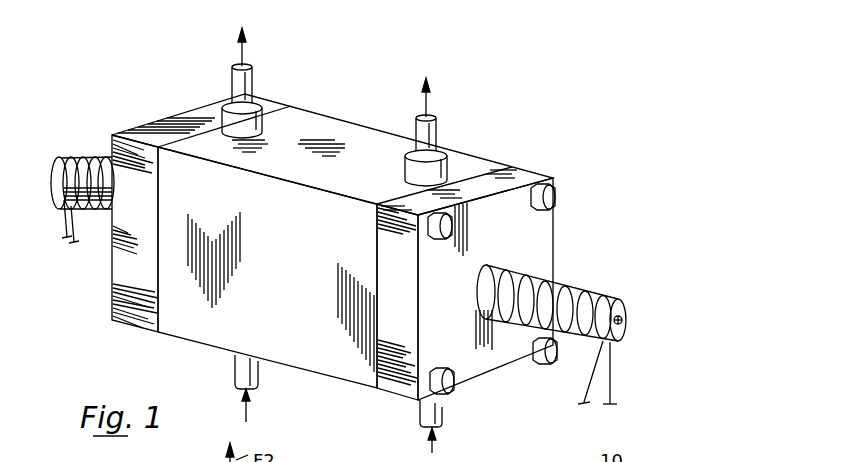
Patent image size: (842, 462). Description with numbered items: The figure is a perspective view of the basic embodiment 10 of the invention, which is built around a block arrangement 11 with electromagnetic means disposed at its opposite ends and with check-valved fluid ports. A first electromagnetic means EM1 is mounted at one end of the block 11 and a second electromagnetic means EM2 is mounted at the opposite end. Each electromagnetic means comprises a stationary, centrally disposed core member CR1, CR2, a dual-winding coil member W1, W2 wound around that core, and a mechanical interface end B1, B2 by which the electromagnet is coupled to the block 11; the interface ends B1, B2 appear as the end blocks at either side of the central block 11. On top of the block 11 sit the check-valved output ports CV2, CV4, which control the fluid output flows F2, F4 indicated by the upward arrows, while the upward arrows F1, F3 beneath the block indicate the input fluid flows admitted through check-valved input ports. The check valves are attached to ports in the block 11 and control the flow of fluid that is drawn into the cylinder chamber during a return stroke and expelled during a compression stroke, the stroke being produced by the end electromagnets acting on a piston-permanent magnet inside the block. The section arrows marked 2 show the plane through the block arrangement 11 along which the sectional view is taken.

The basic embodiment 10 is at (335, 66).
The block arrangement 11 is at (296, 297).
The mechanical interface end B1 is at (113, 292).
The mechanical interface end B2 is at (557, 252).
The check-valved fluid output port CV2 is at (262, 100).
The check-valved fluid output port CV4 is at (448, 168).
The input fluid flow F1 is at (246, 414).
The fluid output flow F2 is at (247, 53).
The input fluid flow F3 is at (432, 445).
The fluid output flow F4 is at (431, 104).
The first electromagnetic means EM1 is at (98, 147).
The second electromagnetic means EM2 is at (600, 283).
The core member CR1 is at (55, 182).
The core member CR2 is at (627, 310).
The dual-winding coil member W1 is at (74, 243).
The dual-winding coil member W2 is at (611, 378).
The section line 2- 2 is at (33, 171).